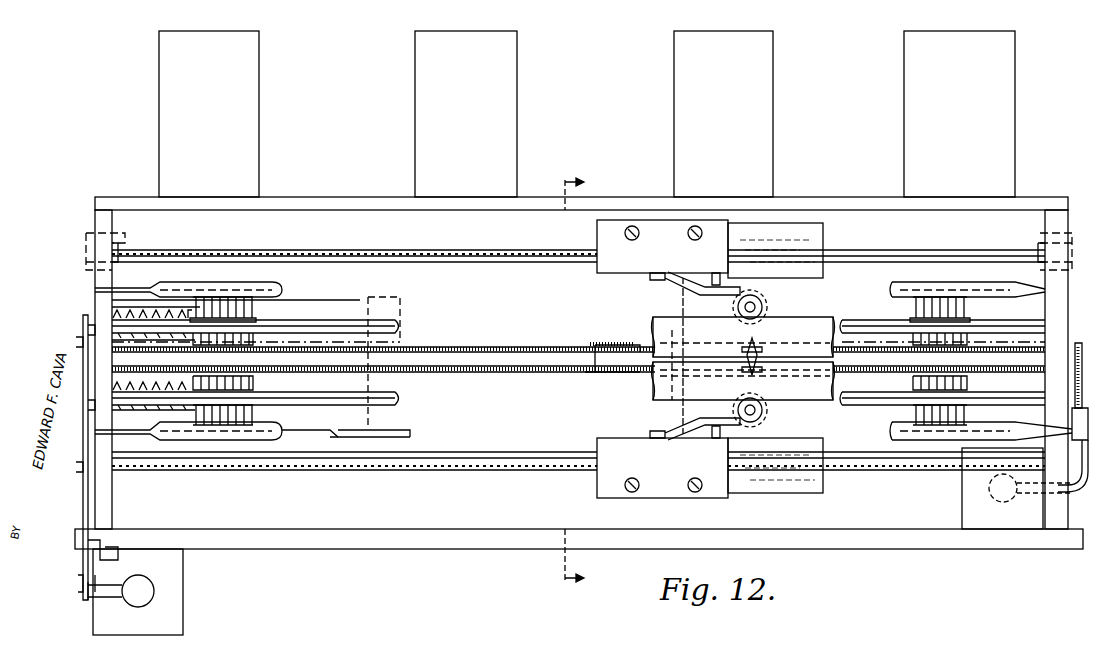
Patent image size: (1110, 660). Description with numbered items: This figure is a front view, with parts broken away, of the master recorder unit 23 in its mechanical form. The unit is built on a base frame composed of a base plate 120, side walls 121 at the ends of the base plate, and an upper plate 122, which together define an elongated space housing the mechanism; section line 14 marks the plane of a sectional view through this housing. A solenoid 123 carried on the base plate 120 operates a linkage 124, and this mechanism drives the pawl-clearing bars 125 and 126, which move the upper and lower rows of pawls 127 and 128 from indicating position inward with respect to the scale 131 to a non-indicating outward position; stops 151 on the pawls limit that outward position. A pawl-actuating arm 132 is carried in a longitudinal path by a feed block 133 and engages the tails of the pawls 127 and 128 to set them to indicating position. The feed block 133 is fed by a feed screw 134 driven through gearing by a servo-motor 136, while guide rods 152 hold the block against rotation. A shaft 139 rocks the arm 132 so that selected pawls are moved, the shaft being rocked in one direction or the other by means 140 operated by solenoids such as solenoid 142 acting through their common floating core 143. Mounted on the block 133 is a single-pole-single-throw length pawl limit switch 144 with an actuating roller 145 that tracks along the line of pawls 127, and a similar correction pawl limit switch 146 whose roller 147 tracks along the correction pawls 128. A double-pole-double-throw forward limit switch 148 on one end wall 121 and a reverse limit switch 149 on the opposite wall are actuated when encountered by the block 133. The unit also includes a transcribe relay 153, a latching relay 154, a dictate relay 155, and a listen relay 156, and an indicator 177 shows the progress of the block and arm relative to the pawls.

The section line 14 is at (563, 378).
The master recorder unit 23 is at (375, 178).
The base plate 120 is at (435, 540).
The side walls 121 is at (96, 294).
The upper plate 122 is at (822, 197).
The solenoid 123 is at (183, 612).
The linkage 124 is at (74, 431).
The pawl-clearing bar 125 is at (398, 316).
The pawl-clearing bar 126 is at (400, 398).
The pawls 127 is at (242, 297).
The pawls 128 is at (242, 422).
The scale 131 is at (665, 380).
The pawl-actuating arm 132 is at (762, 347).
The feed block 133 is at (770, 478).
The feed screw 134 is at (598, 372).
The servo-motor 136 is at (340, 430).
The shaft 139 is at (636, 350).
The means 140 is at (1091, 360).
The solenoid 142 is at (1000, 520).
The floating core 143 is at (1006, 501).
The limit switch 144 is at (615, 270).
The actuating roller 145 is at (766, 303).
The limit switch 146 is at (612, 422).
The actuating roller 147 is at (765, 411).
The forward limit switch 148 is at (1040, 240).
The reverse limit switch 149 is at (130, 240).
The stops 151 is at (185, 283).
The guide rods 152 is at (430, 252).
The transcribe relay 153 is at (259, 73).
The latching relay 154 is at (1015, 73).
The dictate relay 155 is at (517, 82).
The listen relay 156 is at (773, 73).
The indicator 177 is at (750, 348).